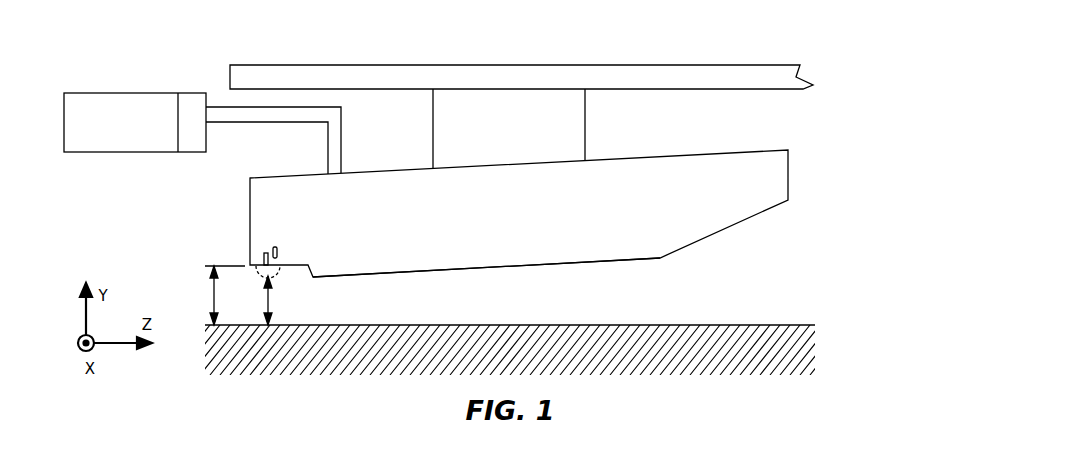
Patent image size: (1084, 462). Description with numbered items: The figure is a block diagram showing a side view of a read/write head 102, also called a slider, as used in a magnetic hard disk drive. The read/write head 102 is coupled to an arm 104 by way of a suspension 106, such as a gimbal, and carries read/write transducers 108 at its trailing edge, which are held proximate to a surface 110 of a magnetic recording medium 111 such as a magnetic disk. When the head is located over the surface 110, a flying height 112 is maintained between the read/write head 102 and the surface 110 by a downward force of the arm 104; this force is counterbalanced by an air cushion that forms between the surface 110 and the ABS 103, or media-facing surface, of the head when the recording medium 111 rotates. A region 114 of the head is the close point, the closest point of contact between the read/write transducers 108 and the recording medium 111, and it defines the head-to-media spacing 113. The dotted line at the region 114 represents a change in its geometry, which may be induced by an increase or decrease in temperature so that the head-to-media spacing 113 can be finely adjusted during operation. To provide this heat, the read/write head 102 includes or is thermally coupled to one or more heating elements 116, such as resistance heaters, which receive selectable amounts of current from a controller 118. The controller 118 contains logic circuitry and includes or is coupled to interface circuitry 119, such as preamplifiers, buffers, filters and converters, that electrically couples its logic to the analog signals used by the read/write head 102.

The read/write head 102 is at (720, 153).
The ABS 103 is at (533, 266).
The arm 104 is at (703, 74).
The suspension 106 is at (586, 147).
The read/write transducers 108 is at (265, 254).
The surface 110 is at (797, 325).
The magnetic recording medium 111 is at (664, 372).
The flying height 112 is at (211, 295).
The head-to-media spacing 113 is at (253, 300).
The region 114 is at (280, 272).
The heating elements 116 is at (275, 247).
The controller 118 is at (101, 98).
The interface circuitry 119 is at (187, 97).